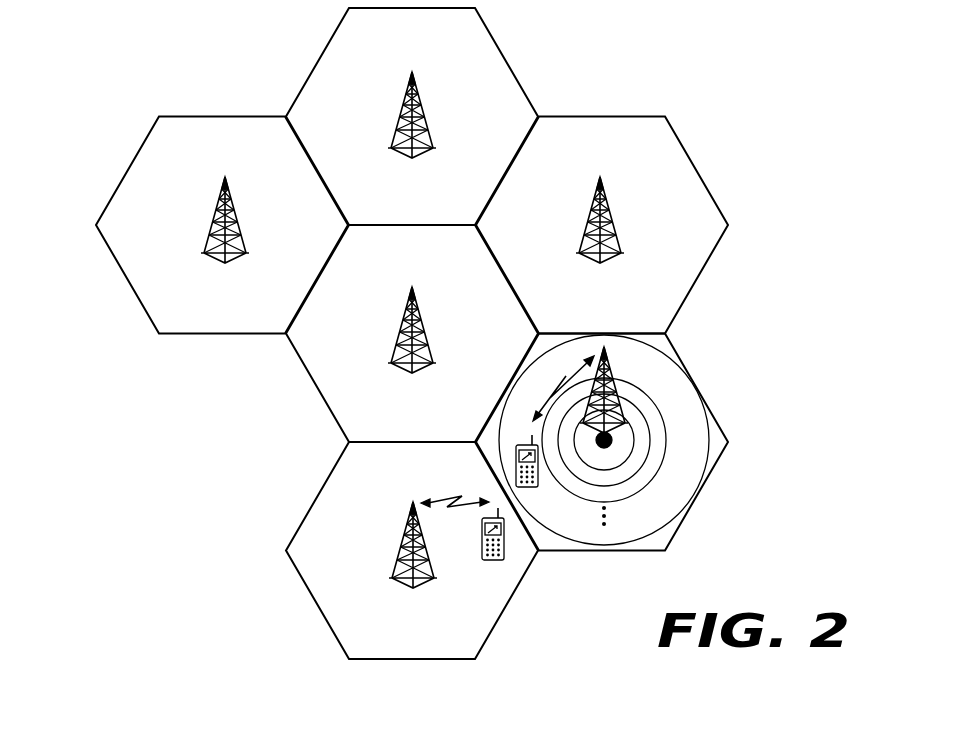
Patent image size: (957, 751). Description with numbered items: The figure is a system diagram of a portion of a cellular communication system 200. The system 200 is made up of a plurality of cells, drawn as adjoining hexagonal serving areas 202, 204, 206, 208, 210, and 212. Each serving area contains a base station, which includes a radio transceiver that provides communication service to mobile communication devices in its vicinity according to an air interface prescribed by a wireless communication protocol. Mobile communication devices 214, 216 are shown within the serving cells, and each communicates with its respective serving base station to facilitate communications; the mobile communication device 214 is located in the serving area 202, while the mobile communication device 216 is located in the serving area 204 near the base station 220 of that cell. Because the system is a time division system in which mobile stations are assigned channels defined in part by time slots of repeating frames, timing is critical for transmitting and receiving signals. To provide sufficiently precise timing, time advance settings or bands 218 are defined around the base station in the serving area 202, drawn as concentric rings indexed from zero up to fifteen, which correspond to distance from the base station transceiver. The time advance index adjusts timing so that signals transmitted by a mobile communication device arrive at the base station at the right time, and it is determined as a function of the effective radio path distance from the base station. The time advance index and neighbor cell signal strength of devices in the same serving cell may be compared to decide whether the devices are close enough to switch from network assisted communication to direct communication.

The cellular communication system 200 is at (808, 549).
The serving area 202 is at (651, 467).
The serving area 204 is at (381, 550).
The serving area 206 is at (318, 387).
The serving area 208 is at (159, 116).
The serving area 210 is at (349, 8).
The serving area 212 is at (665, 116).
The mobile communication device 214 is at (527, 490).
The mobile communication device 216 is at (500, 560).
The time advance settings or bands 218 is at (606, 362).
The base station 220 is at (403, 533).